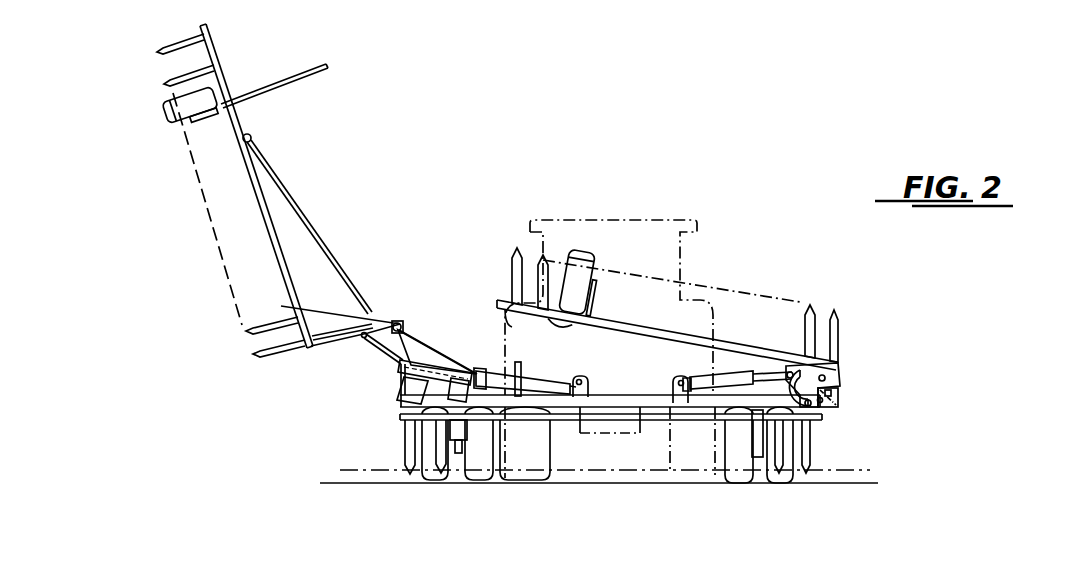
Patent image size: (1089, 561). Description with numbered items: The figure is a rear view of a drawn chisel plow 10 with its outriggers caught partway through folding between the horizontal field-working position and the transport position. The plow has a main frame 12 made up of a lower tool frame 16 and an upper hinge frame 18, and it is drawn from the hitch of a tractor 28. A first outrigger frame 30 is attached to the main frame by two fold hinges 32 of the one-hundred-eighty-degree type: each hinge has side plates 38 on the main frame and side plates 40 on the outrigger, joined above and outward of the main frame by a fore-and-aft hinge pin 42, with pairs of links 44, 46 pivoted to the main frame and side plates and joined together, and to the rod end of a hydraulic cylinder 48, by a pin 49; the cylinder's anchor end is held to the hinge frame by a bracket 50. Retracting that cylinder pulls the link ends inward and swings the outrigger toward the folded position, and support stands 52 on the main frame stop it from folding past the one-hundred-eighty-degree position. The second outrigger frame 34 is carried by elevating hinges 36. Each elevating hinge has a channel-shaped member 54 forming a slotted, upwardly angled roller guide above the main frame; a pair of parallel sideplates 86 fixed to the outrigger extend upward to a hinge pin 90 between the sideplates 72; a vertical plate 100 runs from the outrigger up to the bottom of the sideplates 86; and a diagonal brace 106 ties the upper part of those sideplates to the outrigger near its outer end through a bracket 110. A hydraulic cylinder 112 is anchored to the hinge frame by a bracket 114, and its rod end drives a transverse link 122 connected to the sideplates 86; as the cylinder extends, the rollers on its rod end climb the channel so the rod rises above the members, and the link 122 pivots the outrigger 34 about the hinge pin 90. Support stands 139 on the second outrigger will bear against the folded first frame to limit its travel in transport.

The chisel plow 10 is at (420, 262).
The main frame 12 is at (616, 385).
The lower tool frame 16 is at (400, 416).
The upper hinge frame 18 is at (615, 433).
The tractor 28 is at (593, 218).
The first outrigger frame 30 is at (647, 326).
The fold hinge 32 is at (856, 383).
The second outrigger frame 34 is at (243, 178).
The elevating fold hinge 36 is at (362, 370).
The side plates 38 is at (823, 402).
The side plates 40 is at (838, 372).
The hinge pin 42 is at (838, 393).
The links 44 is at (752, 380).
The links 46 is at (796, 362).
The hydraulic cylinder 48 is at (724, 374).
The pin 49 is at (788, 368).
The bracket 50 is at (677, 388).
The support stands 52 is at (521, 364).
The channel-shaped member 54 is at (438, 348).
The sideplates 72 is at (418, 340).
The sideplates 86 is at (318, 307).
The hinge pin 90 is at (400, 320).
The vertical plate 100 is at (312, 352).
The diagonal brace 106 is at (300, 208).
The bracket 110 is at (251, 136).
The hydraulic cylinder 112 is at (483, 368).
The bracket 114 is at (594, 365).
The link 122 is at (388, 356).
The support stands 139 is at (298, 73).